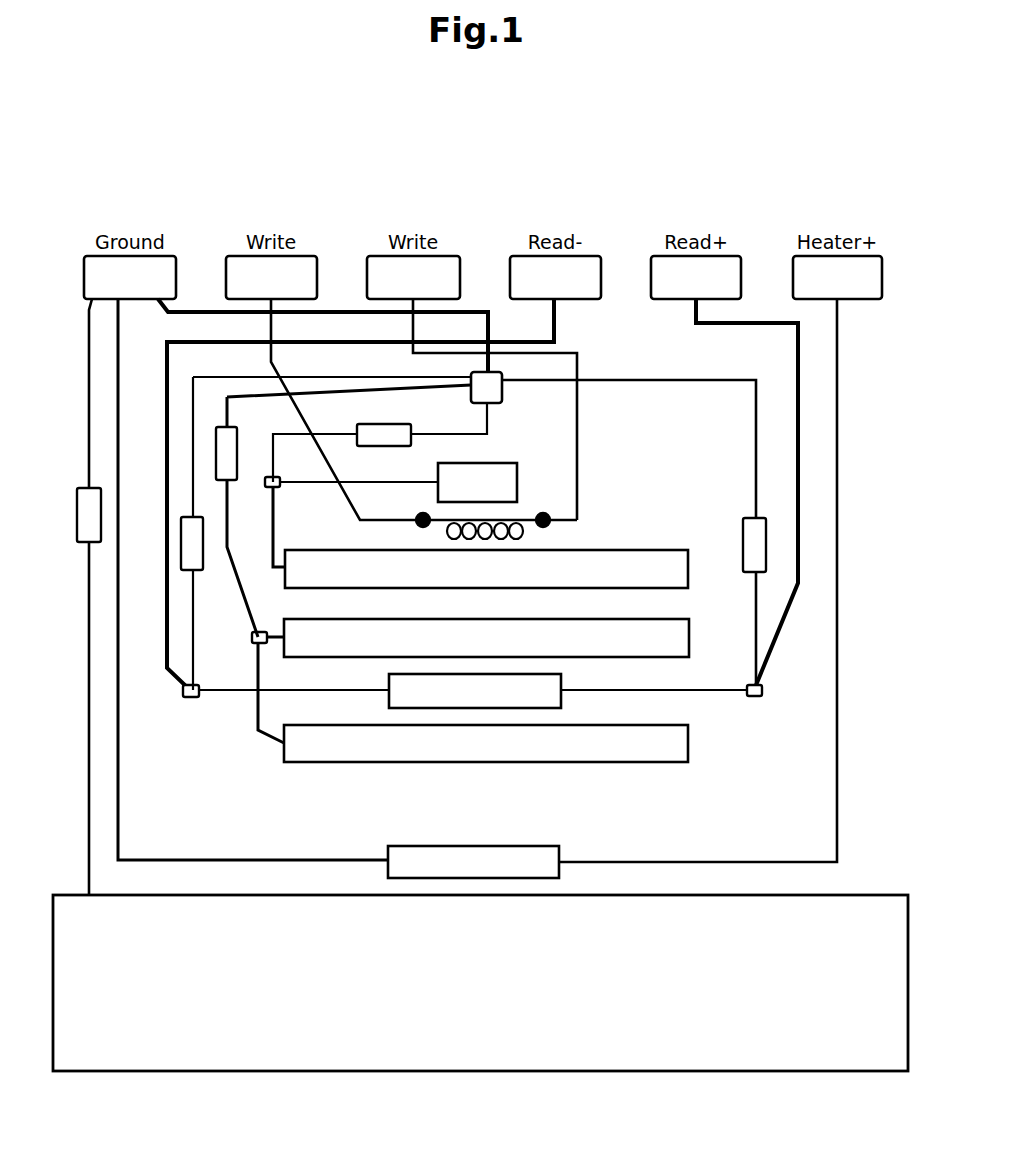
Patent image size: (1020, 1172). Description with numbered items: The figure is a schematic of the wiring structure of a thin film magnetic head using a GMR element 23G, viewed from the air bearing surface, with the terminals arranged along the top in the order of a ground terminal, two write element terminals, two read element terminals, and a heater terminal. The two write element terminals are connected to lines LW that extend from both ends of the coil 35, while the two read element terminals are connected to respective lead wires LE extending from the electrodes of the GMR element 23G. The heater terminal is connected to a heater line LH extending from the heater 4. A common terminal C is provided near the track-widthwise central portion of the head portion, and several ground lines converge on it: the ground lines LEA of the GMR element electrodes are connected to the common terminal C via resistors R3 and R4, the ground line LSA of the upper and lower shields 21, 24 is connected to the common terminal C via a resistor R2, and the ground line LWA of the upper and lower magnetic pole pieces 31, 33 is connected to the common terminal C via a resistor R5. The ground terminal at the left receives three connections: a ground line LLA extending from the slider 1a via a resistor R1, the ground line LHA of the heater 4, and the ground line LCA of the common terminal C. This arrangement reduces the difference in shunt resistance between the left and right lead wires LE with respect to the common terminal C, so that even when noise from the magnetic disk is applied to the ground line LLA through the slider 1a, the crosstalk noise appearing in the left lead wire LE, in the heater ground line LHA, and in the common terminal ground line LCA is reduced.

The slider 1a is at (863, 902).
The heater 4 is at (540, 860).
The lower shield 21 is at (625, 745).
The upper shield 24 is at (625, 642).
The GMR element 23G is at (562, 680).
The lower magnetic pole piece 31 is at (626, 570).
The upper magnetic pole piece 33 is at (496, 482).
The coil 35 is at (518, 535).
The common terminal C is at (505, 404).
The line LW is at (578, 420).
The ground line of the upper and lower magnetic pole pieces LWA is at (273, 443).
The ground line of the upper and lower shields LSA is at (233, 398).
The ground line of the GMR element electrodes LEA is at (244, 373).
The lead wire LE is at (165, 568).
The ground line of the common terminal LCA is at (192, 313).
The ground line of the slider LLA is at (89, 646).
The ground line of the heater LHA is at (118, 830).
The heater line LH is at (837, 741).
The resistor R1 is at (77, 510).
The resistor R2 is at (239, 478).
The resistor R3 is at (202, 568).
The resistor R4 is at (744, 534).
The resistor R5 is at (367, 448).